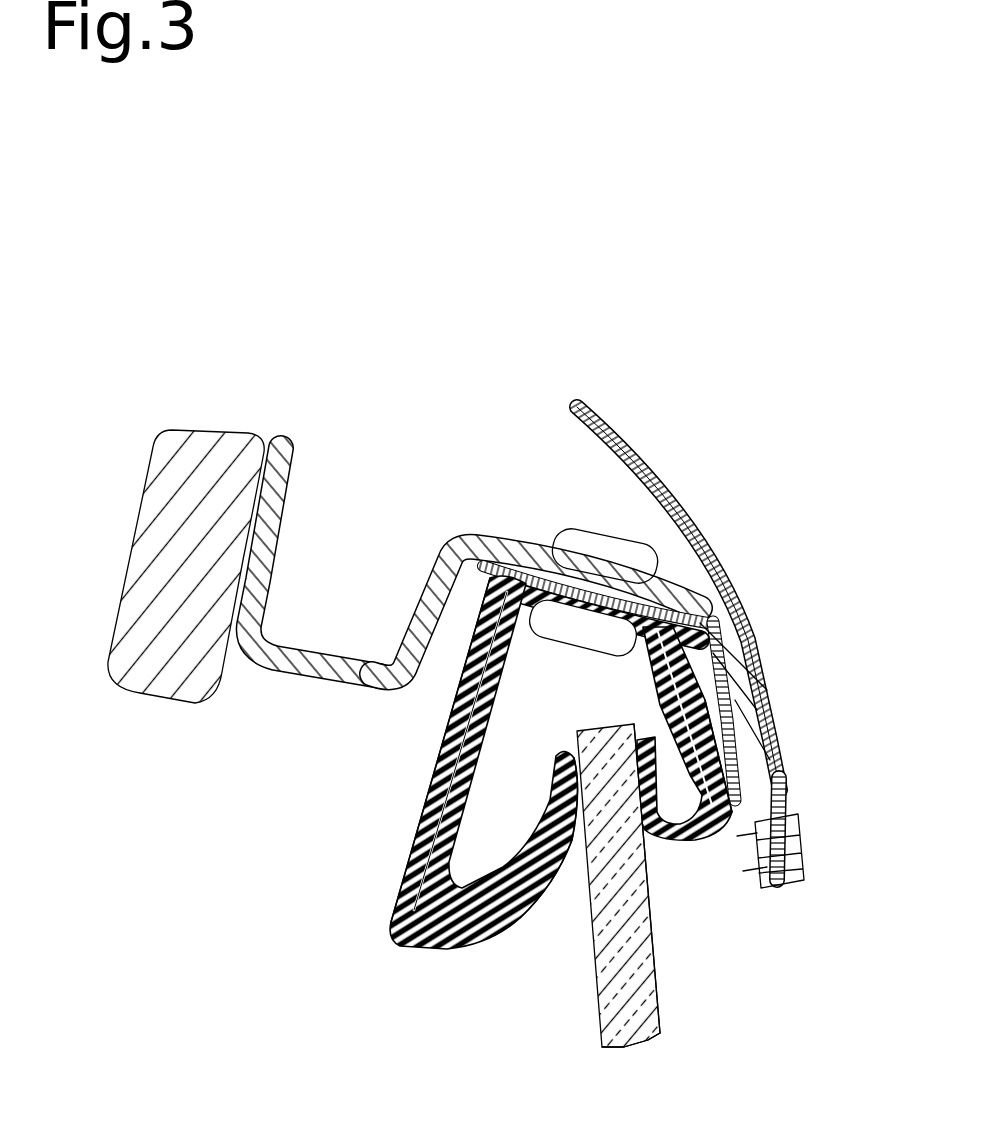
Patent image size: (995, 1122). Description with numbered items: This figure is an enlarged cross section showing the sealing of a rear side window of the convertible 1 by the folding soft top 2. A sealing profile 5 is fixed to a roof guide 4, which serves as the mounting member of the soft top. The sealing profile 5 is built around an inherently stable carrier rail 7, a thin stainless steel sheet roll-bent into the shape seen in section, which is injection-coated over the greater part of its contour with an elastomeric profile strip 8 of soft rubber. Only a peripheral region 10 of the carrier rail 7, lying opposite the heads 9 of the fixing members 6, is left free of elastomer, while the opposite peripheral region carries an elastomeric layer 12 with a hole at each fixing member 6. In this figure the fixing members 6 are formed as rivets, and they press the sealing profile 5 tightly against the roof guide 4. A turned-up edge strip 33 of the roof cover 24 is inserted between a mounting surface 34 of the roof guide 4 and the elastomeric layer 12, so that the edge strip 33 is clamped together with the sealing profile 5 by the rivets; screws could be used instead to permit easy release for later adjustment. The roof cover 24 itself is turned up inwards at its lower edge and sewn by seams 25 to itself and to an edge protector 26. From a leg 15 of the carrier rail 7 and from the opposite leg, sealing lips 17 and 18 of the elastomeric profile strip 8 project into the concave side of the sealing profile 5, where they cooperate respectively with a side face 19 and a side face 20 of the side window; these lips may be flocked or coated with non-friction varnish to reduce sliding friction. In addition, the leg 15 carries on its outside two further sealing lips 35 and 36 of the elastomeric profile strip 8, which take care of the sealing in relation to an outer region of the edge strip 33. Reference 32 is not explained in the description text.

The convertible 1 is at (235, 939).
The folding soft top 2 is at (637, 433).
The roof guide 4 is at (235, 655).
The sealing profile 5 is at (440, 963).
The fixing members 6 is at (621, 508).
The carrier rail 7 is at (400, 880).
The elastomeric profile strip 8 is at (416, 790).
The heads 9 is at (594, 648).
The peripheral region 10 is at (573, 660).
The elastomeric layer 12 is at (558, 548).
The leg 15 is at (708, 812).
The sealing lip 17 is at (673, 838).
The sealing lip 18 is at (540, 905).
The side face 19 is at (660, 956).
The side face 20 is at (603, 1020).
The roof cover 24 is at (706, 522).
The seams 25 is at (805, 855).
The edge protector 26 is at (790, 875).
The glass surface 32 is at (676, 1017).
The edge strip 33 is at (460, 565).
The mounting surface 34 is at (462, 563).
The sealing lip 35 is at (722, 690).
The sealing lip 36 is at (723, 763).